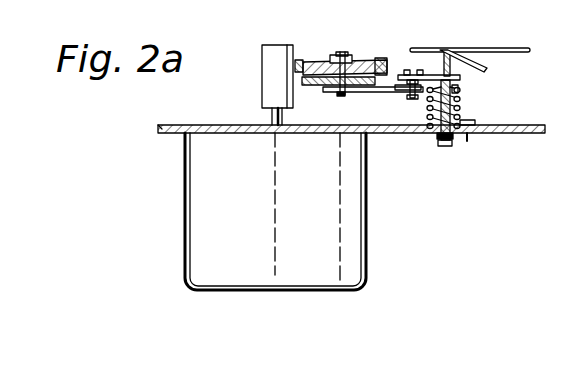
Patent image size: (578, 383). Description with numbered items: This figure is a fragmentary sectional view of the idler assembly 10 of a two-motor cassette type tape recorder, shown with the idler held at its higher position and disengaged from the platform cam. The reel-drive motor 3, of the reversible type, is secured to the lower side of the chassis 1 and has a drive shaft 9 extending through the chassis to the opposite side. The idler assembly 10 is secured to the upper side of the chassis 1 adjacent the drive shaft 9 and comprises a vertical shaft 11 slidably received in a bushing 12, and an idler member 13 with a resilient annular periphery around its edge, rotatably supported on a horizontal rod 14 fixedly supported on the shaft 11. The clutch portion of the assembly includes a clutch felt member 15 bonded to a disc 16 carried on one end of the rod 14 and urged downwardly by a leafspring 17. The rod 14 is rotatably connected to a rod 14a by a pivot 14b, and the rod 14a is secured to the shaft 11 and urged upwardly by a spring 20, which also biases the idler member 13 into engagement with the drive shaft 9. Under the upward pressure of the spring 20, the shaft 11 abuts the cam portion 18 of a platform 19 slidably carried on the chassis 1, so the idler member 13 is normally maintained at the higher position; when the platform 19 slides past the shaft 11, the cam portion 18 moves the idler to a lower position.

The chassis 1 is at (531, 137).
The reel-drive motor 3 is at (356, 213).
The drive shaft 9 is at (262, 51).
The idler assembly 10 is at (481, 22).
The vertical shaft 11 is at (441, 146).
The bushing 12 is at (460, 118).
The idler member 13 is at (372, 62).
The rod 14 is at (358, 92).
The rod 14a is at (407, 75).
The pivot 14b is at (405, 90).
The clutch felt member 15 is at (312, 85).
The disc 16 is at (378, 95).
The leafspring 17 is at (322, 60).
The cam portion 18 is at (478, 62).
The platform 19 is at (524, 48).
The spring 20 is at (458, 96).